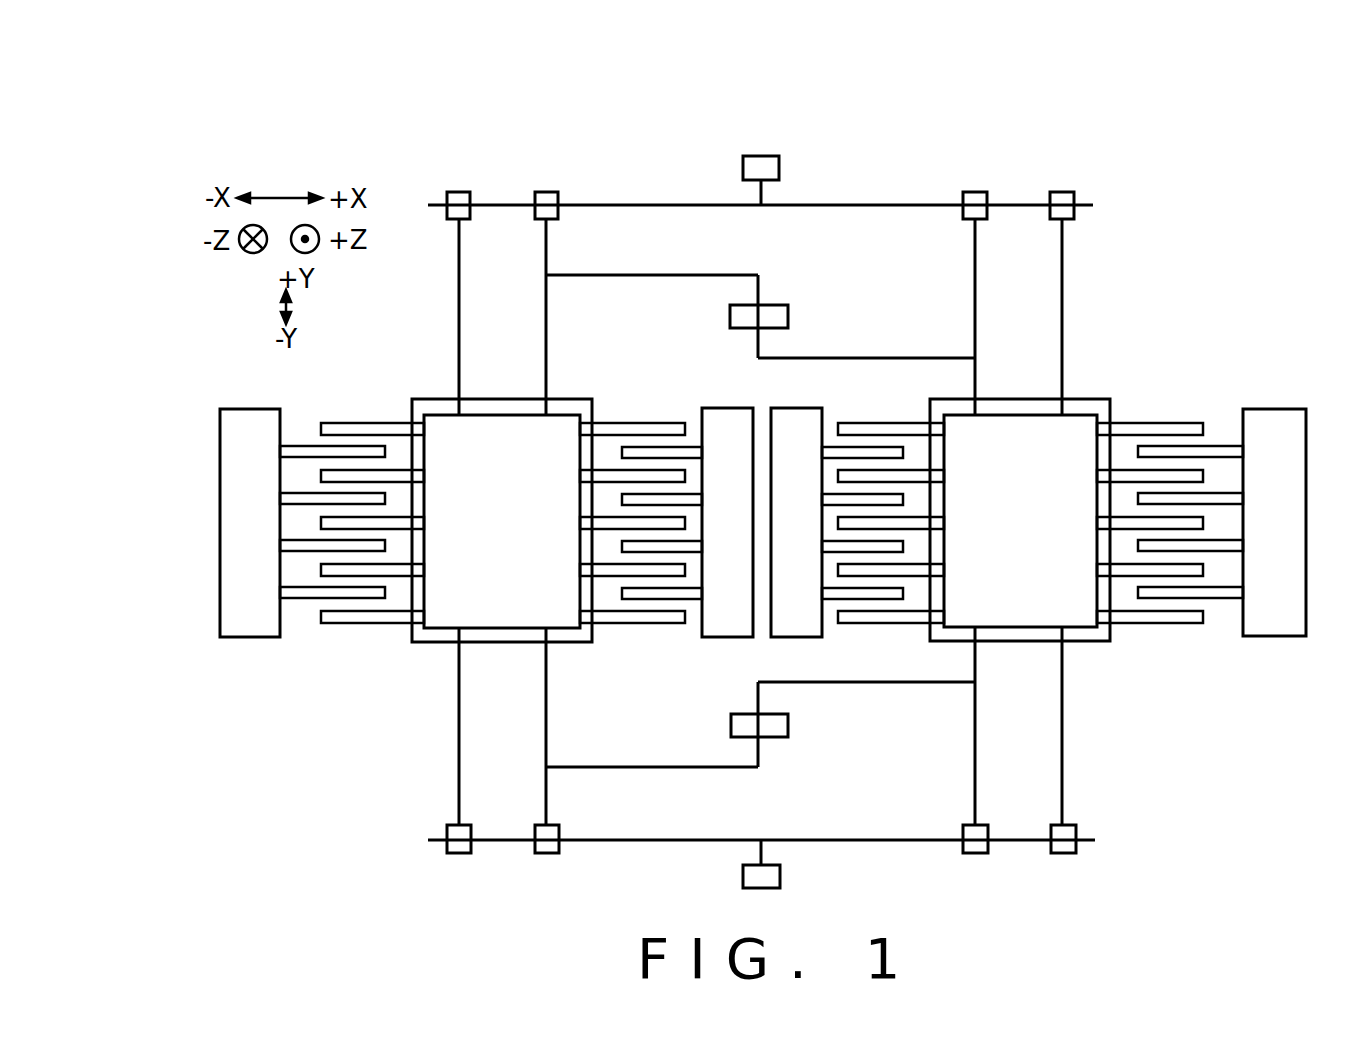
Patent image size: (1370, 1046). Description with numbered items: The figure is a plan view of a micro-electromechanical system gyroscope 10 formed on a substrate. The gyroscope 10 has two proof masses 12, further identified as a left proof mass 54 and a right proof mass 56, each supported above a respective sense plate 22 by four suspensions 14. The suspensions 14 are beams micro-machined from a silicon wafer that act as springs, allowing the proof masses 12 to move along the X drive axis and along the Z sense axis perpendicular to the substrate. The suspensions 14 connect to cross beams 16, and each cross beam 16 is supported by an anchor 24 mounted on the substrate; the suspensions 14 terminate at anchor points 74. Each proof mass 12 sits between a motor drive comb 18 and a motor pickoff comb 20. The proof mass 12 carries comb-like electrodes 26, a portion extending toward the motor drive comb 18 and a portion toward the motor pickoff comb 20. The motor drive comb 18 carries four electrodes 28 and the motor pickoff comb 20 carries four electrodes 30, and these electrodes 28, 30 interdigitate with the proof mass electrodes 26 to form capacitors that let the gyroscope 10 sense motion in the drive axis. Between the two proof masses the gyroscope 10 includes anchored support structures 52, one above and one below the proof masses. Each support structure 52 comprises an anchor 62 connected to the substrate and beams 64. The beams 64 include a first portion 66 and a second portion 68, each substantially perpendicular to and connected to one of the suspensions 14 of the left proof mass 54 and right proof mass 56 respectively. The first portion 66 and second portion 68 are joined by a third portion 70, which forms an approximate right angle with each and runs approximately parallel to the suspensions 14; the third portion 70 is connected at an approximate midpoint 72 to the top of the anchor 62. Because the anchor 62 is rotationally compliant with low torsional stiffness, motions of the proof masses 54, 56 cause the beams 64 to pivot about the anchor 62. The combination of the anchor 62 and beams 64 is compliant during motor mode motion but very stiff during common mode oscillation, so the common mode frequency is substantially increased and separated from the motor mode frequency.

The MEMS gyroscope 10 is at (1130, 188).
The proof mass 12 is at (440, 628).
The suspension 14 is at (547, 234).
The cross beam 16 is at (600, 205).
The motor drive comb 18 is at (241, 409).
The motor pickoff comb 20 is at (762, 524).
The sense plate 22 is at (560, 642).
The anchor 24 is at (779, 170).
The comb-like electrode 26 is at (632, 623).
The comb-like electrode 28 is at (300, 599).
The comb-like electrode 30 is at (690, 599).
The anchored support structure 52 is at (760, 517).
The left proof mass 54 is at (443, 413).
The right proof mass 56 is at (1083, 399).
The anchor 62 is at (788, 316).
The beam 64 is at (655, 276).
The first portion 66 is at (865, 358).
The second portion 68 is at (583, 275).
The third portion 70 is at (760, 343).
The midpoint 72 is at (757, 305).
The anchor point 74 is at (459, 192).